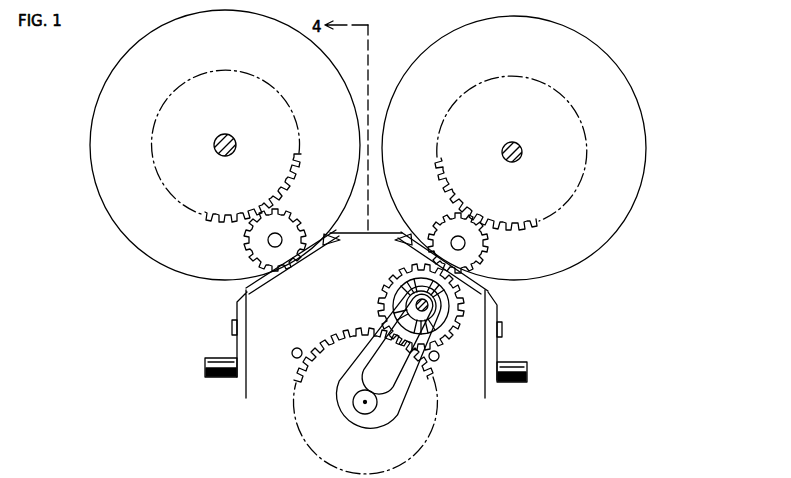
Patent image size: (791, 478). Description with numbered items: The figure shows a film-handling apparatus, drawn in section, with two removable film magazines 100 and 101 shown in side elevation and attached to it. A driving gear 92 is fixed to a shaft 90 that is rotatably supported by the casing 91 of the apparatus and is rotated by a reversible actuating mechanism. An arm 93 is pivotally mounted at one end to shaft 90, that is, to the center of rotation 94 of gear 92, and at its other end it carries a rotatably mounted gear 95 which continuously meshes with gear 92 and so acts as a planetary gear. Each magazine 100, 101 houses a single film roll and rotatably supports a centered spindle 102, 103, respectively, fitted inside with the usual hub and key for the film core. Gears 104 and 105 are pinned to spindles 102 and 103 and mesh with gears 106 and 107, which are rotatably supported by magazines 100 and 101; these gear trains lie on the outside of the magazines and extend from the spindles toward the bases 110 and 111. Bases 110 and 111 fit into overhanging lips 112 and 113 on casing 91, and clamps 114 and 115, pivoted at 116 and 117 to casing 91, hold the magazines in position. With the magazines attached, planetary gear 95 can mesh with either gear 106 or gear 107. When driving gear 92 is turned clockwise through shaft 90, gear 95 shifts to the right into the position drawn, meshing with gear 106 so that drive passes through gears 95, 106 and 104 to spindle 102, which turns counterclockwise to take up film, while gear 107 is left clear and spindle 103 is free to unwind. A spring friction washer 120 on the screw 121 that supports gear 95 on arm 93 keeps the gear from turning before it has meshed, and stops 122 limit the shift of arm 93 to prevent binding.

The film magazine 100 is at (530, 32).
The film magazine 101 is at (241, 32).
The spindle 102 is at (518, 147).
The spindle 103 is at (230, 151).
The gear 104 is at (517, 220).
The gear 105 is at (205, 219).
The gear 106 is at (478, 263).
The gear 107 is at (262, 268).
The base 110 is at (406, 247).
The base 111 is at (326, 245).
The overhanging lip 112 is at (399, 233).
The overhanging lip 113 is at (336, 232).
The clamp 114 is at (499, 311).
The clamp 115 is at (237, 308).
The pivot 116 is at (503, 335).
The pivot 117 is at (232, 330).
The spring friction washer 120 is at (390, 293).
The screw 121 is at (386, 315).
The stop 122 is at (295, 358).
The shaft 90 is at (372, 414).
The casing 91 is at (245, 388).
The driving gear 92 is at (323, 341).
The arm 93 is at (393, 408).
The center of rotation 94 is at (364, 404).
The planetary gear 95 is at (452, 328).